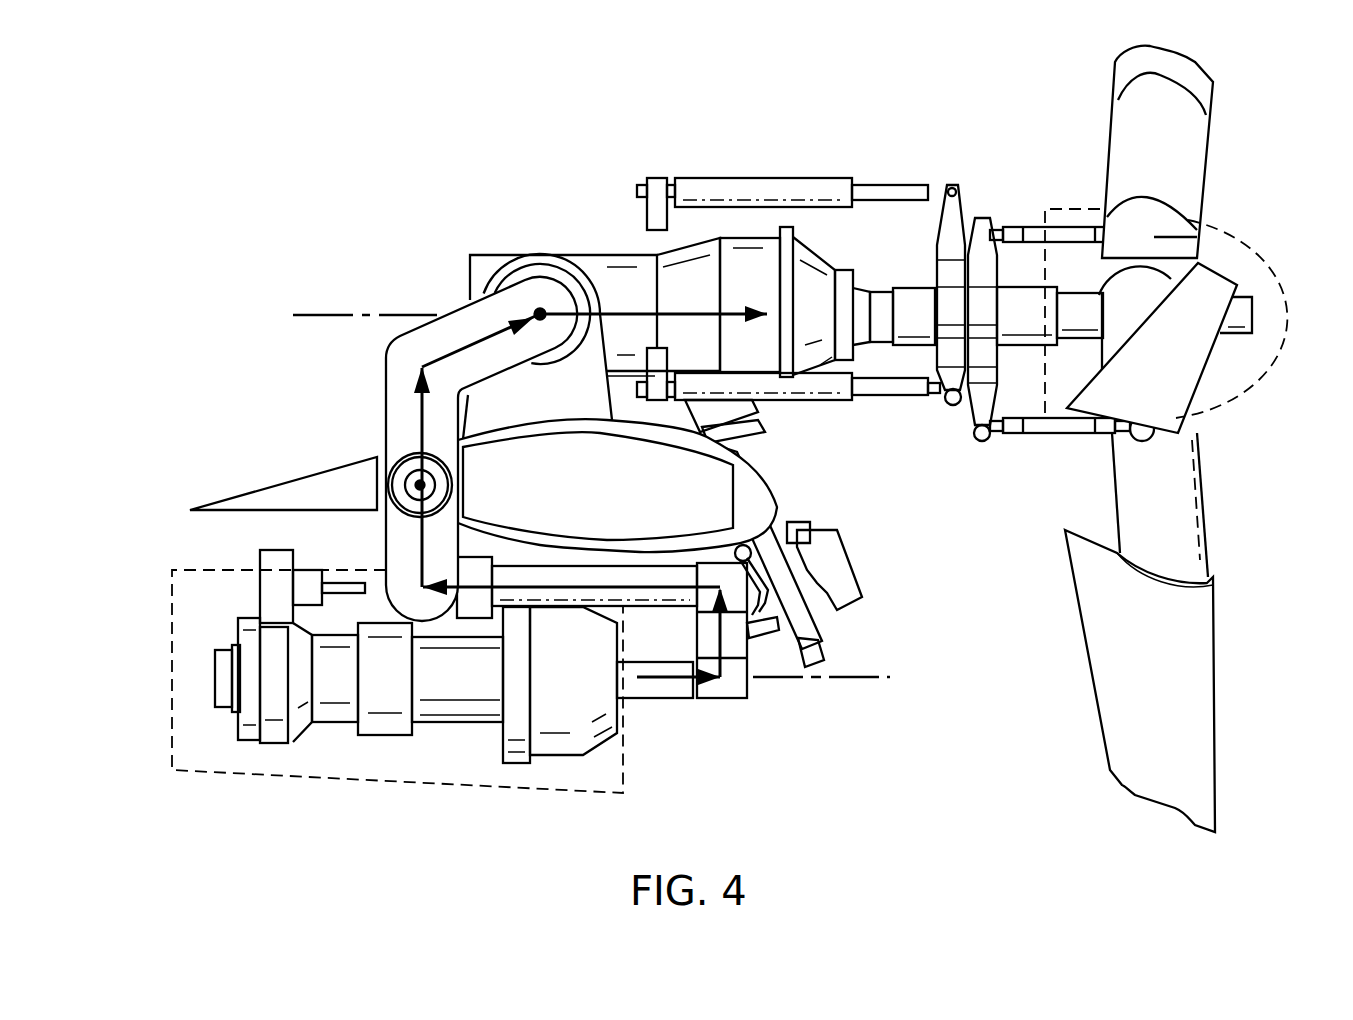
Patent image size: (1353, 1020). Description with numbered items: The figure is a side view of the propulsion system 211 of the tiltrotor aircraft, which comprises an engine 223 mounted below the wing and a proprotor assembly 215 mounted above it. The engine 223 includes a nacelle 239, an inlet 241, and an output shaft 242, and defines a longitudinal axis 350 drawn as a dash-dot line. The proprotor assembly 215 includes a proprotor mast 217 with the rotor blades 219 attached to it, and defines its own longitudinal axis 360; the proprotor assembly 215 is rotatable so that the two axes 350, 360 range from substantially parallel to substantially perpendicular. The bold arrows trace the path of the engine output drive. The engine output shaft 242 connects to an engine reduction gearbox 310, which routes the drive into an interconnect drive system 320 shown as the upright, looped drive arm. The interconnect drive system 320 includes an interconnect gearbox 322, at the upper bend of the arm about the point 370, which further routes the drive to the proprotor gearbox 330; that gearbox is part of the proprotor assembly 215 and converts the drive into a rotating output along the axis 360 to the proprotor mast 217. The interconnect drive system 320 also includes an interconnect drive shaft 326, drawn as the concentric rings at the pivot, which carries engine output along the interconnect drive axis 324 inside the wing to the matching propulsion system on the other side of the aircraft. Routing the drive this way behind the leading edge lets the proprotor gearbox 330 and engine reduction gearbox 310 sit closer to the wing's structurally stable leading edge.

The propulsion system 211 is at (476, 145).
The proprotor assembly 215 is at (1245, 190).
The proprotor mast 217 is at (1065, 209).
The propeller blade 219 is at (1097, 697).
The engine 223 is at (623, 745).
The nacelle 239 is at (390, 790).
The inlet 241 is at (558, 755).
The output shaft 242 is at (660, 702).
The engine reduction gearbox 310 is at (747, 683).
The interconnect drive system 320 is at (386, 548).
The interconnect gearbox 322 is at (500, 280).
The interconnect drive axis 324 is at (432, 486).
The interconnect drive shaft 326 is at (405, 465).
The proprotor gearbox 330 is at (598, 254).
The longitudinal axis 350 is at (882, 682).
The longitudinal axis 360 is at (330, 313).
The pivot point 370 is at (543, 323).